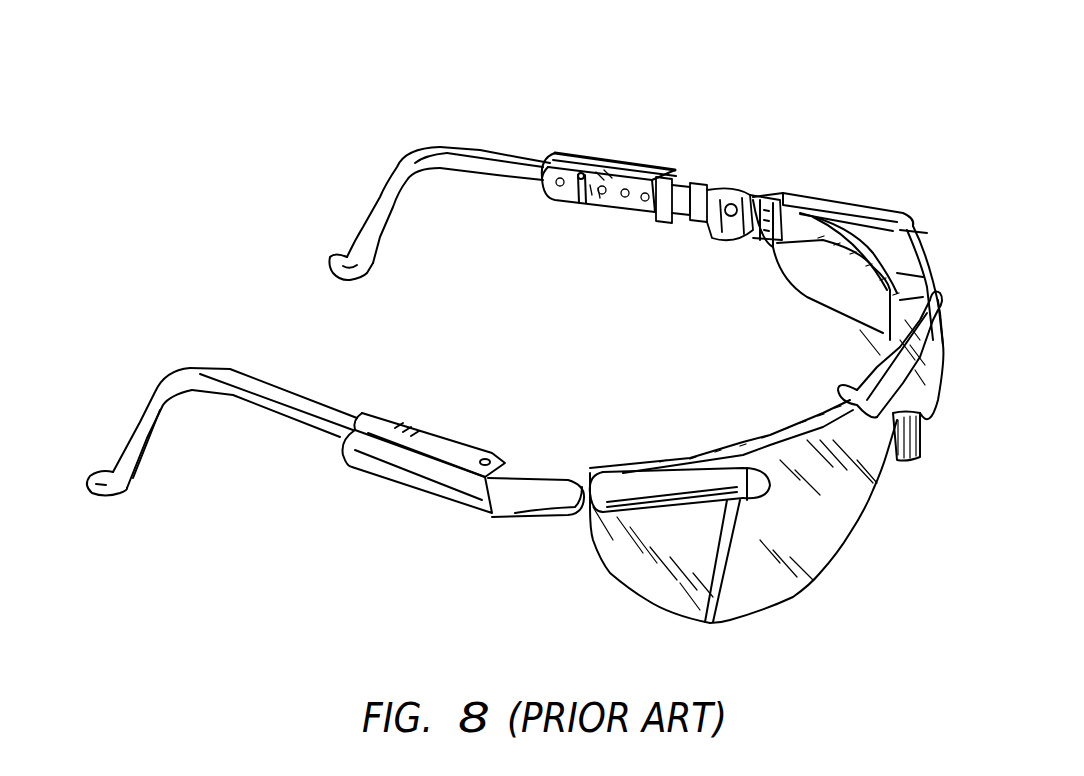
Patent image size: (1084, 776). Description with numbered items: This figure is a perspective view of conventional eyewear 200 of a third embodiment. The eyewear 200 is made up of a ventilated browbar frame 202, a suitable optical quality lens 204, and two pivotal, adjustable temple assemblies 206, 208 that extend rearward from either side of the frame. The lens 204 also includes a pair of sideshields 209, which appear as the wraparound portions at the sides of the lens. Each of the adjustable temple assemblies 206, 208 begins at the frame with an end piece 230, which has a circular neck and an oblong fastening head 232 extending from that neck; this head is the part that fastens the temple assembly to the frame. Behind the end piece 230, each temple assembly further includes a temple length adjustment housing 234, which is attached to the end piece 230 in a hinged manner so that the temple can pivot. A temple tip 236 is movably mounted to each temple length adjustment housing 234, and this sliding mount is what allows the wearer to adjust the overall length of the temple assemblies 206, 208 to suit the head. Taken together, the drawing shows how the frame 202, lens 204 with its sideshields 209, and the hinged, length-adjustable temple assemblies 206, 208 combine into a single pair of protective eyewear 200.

The eyewear 200 is at (396, 594).
The ventilated browbar frame 202 is at (843, 380).
The optical quality lens 204 is at (840, 548).
The adjustable temple assembly 206 is at (438, 429).
The adjustable temple assembly 208 is at (643, 158).
The sideshield 209 is at (662, 585).
The end piece 230 is at (527, 503).
The oblong fastening head 232 is at (723, 190).
The temple length adjustment housing 234 is at (413, 487).
The temple tip 236 is at (135, 477).